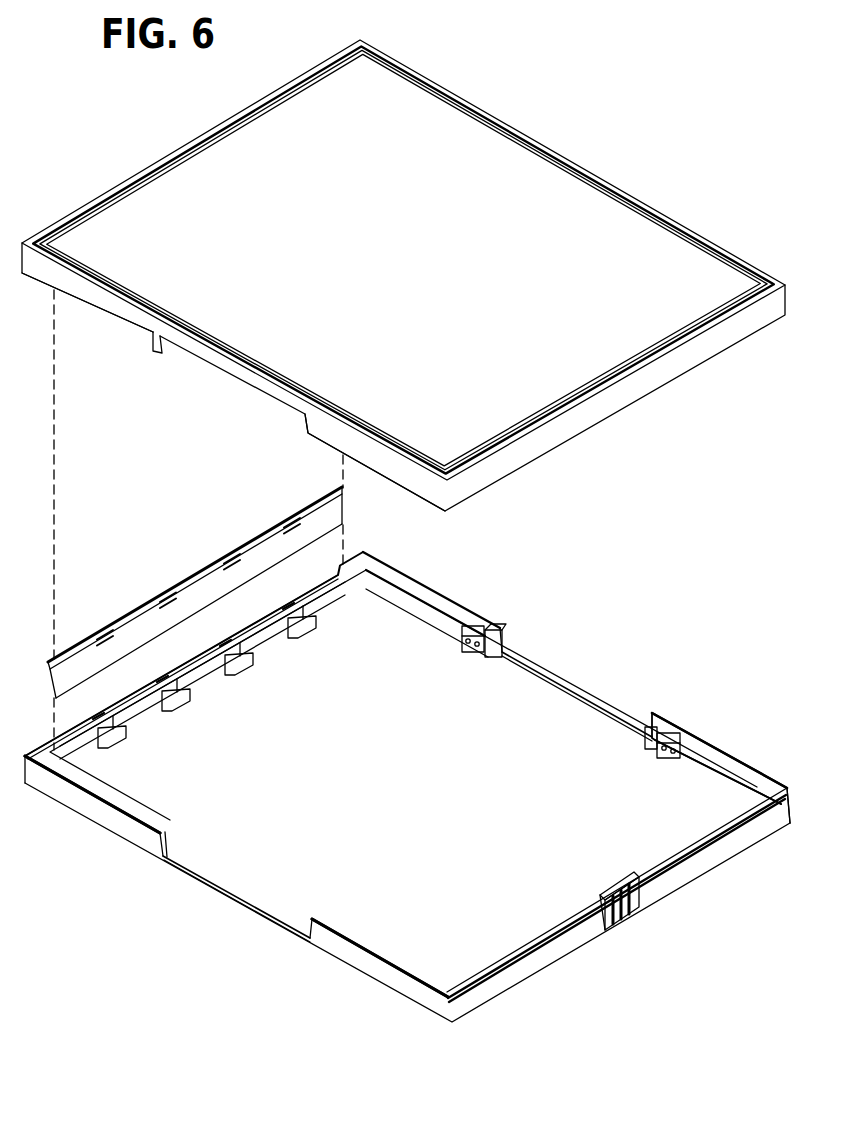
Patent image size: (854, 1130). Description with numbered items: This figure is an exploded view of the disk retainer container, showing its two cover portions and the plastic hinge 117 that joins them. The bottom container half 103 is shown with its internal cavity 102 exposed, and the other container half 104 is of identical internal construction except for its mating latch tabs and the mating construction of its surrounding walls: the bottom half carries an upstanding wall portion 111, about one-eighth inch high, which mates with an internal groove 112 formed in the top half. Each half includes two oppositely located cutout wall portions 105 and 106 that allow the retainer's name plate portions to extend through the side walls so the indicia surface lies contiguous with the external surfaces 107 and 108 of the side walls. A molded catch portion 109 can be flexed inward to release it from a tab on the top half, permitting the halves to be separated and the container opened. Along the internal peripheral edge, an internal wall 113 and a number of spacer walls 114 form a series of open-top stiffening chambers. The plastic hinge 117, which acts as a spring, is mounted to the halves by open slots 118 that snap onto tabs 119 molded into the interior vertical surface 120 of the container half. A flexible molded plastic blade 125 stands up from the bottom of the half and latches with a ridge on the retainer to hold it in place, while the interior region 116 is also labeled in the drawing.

The internal cavity 102 is at (570, 718).
The container half 103 is at (678, 690).
The other container half 104 is at (588, 150).
The cutout wall portion 105 is at (247, 900).
The cutout wall portion 106 is at (537, 672).
The external surface 107 is at (423, 485).
The external surface 108 is at (121, 314).
The molded catch portion 109 is at (628, 915).
The upstanding wall portion 111 is at (95, 796).
The internal groove 112 is at (160, 337).
The internal wall 113 is at (730, 790).
The spacer walls 114 is at (768, 790).
The interior opening of base 116 is at (283, 721).
The plastic hinge 117 is at (258, 550).
The open slots 118 is at (168, 613).
The tabs 119 is at (236, 648).
The interior vertical surface 120 is at (147, 692).
The flexible molded plastic blade 125 is at (490, 628).